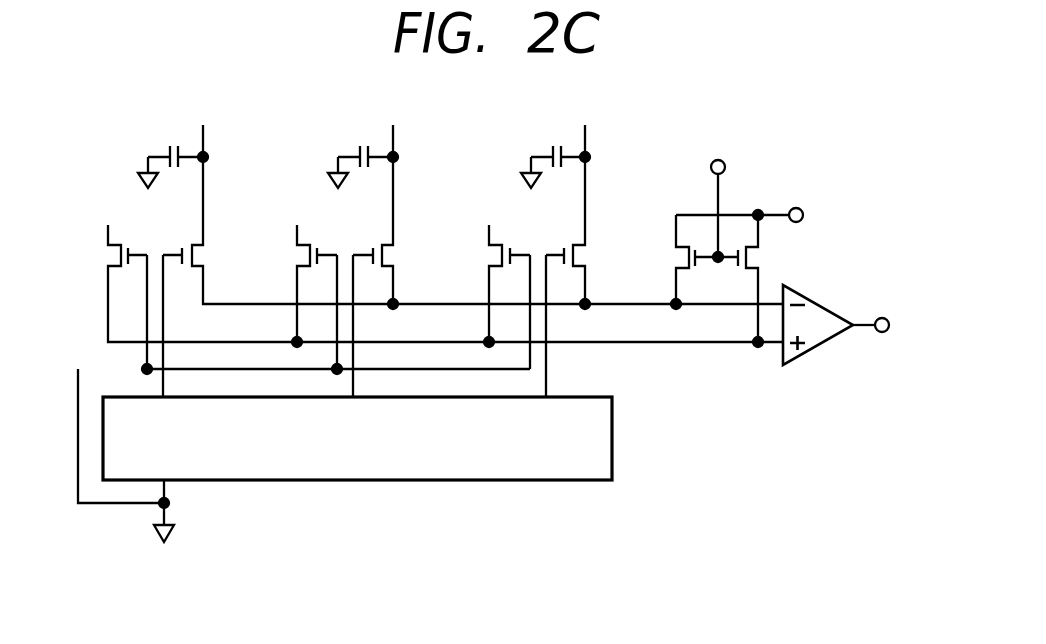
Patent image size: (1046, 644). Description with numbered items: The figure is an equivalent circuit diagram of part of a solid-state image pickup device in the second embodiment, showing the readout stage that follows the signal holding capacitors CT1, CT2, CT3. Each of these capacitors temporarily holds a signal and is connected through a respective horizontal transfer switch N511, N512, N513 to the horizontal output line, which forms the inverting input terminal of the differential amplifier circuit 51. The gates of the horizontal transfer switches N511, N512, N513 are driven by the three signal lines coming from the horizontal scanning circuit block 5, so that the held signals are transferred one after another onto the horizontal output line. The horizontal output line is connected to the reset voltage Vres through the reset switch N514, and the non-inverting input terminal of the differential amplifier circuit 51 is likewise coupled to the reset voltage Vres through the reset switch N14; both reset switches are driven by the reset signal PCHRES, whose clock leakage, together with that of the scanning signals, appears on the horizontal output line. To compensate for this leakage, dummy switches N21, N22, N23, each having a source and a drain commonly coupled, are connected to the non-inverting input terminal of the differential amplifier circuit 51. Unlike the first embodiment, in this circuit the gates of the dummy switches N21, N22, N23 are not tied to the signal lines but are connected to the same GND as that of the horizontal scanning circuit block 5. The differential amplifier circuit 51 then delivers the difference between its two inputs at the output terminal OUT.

The horizontal scanning circuit block 5 is at (612, 418).
The differential amplifier circuit 51 is at (822, 345).
The dummy switch N21 is at (202, 296).
The dummy switch N22 is at (338, 296).
The dummy switch N23 is at (633, 293).
The horizontal transfer switch N511 is at (278, 277).
The horizontal transfer switch N512 is at (469, 277).
The horizontal transfer switch N513 is at (664, 277).
The reset switch N514 is at (705, 262).
The reset switch N14 is at (772, 281).
The signal holding capacitor CT1 is at (173, 152).
The signal holding capacitor CT2 is at (363, 152).
The signal holding capacitor CT3 is at (555, 152).
The reset signal PCHRES is at (718, 197).
The reset voltage Vres is at (764, 217).
The output terminal OUT is at (897, 327).
The element GND is at (126, 455).